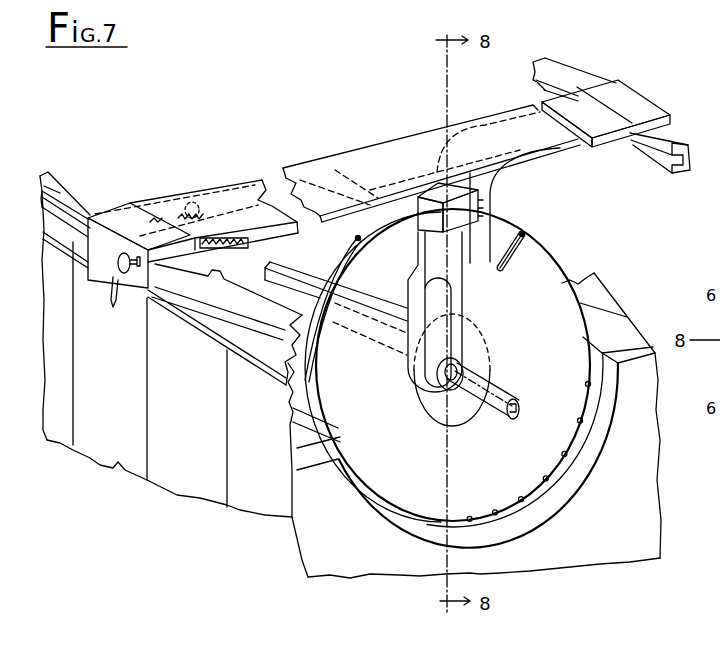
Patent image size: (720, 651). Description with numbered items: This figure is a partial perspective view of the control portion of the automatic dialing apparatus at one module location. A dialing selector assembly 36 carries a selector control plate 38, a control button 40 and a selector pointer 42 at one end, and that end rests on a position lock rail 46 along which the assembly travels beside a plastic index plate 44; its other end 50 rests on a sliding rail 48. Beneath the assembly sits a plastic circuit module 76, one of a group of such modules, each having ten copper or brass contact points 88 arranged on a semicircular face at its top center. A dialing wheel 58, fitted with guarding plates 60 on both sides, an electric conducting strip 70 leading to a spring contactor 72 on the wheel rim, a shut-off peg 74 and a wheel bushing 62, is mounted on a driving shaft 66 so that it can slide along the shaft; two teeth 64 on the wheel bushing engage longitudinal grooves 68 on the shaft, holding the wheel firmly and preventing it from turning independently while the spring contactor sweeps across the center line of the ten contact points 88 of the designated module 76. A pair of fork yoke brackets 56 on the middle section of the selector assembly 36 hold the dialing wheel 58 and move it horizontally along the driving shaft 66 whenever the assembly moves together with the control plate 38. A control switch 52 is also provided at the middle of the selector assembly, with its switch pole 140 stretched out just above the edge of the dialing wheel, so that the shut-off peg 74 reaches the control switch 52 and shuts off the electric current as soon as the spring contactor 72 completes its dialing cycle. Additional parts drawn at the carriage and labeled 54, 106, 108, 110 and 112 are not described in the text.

The dialing selector assembly 36 is at (356, 163).
The selector control plate 38 is at (120, 213).
The control button 40 is at (150, 297).
The selector pointer 42 is at (114, 303).
The plastic index plate 44 is at (118, 458).
The position lock rail 46 is at (90, 203).
The sliding rail 48 is at (672, 148).
The other end of selector assembly 50 is at (630, 99).
The control switch 52 is at (480, 212).
The mounting block 54 is at (407, 186).
The fork yoke brackets 56 is at (422, 373).
The dialing wheel 58 is at (560, 308).
The guarding plates 60 is at (440, 415).
The wheel bushing 62 is at (443, 395).
The teeth 64 is at (455, 366).
The driving shaft 66 is at (498, 413).
The grooves 68 is at (513, 418).
The electric conducting strip 70 is at (370, 293).
The spring contactor 72 is at (348, 249).
The shut-off peg 74 is at (525, 239).
The plastic circuit module 76 is at (332, 518).
The contact points 88 is at (553, 470).
The screw 106 is at (150, 220).
The screw 108 is at (192, 205).
The rail edge 110 is at (69, 187).
The spring 112 is at (228, 232).
The switch pole 140 is at (482, 186).